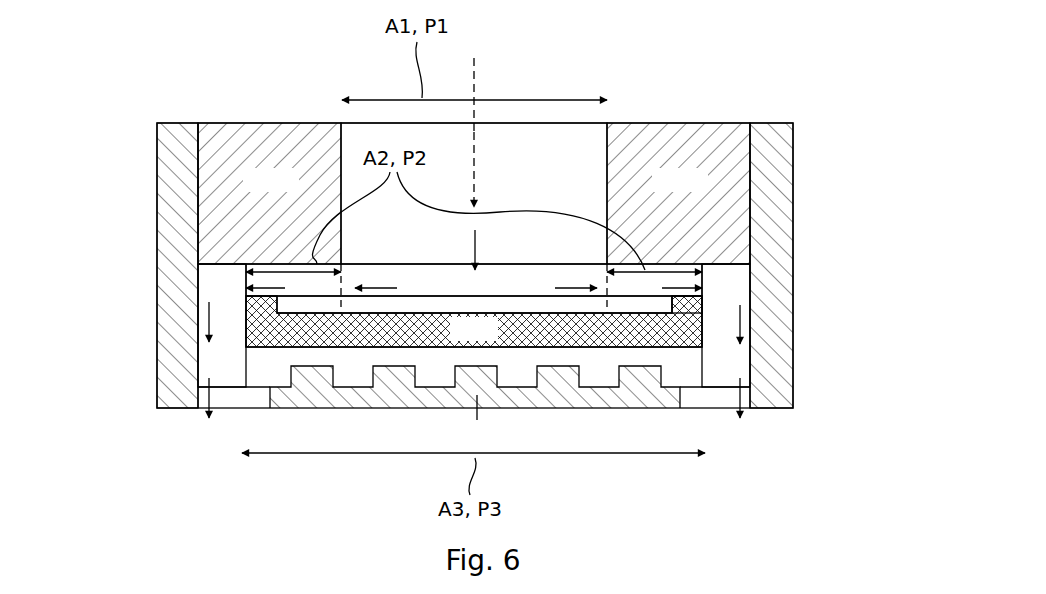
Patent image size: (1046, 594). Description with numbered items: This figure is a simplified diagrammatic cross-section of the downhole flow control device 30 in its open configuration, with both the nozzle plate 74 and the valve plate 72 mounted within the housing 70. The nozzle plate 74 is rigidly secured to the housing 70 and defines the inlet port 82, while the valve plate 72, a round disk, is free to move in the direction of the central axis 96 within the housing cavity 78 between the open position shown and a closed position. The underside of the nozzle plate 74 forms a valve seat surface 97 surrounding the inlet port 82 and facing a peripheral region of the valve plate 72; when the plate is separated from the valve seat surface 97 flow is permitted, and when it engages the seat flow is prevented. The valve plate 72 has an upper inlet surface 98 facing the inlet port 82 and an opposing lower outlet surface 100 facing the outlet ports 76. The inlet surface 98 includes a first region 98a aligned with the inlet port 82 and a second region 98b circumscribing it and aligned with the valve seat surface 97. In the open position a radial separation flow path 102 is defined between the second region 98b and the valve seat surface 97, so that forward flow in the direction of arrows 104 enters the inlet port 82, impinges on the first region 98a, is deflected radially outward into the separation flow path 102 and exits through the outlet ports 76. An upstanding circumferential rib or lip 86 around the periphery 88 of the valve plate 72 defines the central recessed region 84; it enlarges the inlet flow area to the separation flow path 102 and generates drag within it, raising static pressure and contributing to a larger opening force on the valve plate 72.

The downhole flow control device 30 is at (133, 88).
The housing 70 is at (778, 138).
The valve plate 72 is at (652, 325).
The nozzle plate 74 is at (730, 145).
The outlet ports 76 is at (235, 398).
The cavity 78 is at (210, 358).
The inlet port 82 is at (373, 133).
The central circular recessed region 84 is at (497, 313).
The circumferential rib or lip 86 is at (693, 302).
The periphery 88 is at (693, 322).
The central axis 96 is at (476, 60).
The valve seat surface 97 is at (295, 268).
The inlet surface 98 is at (300, 296).
The first region 98a is at (408, 313).
The second region 98b is at (638, 313).
The outlet surface 100 is at (357, 347).
The radial separation flow path 102 is at (663, 285).
The forward flow direction arrows 104 is at (478, 176).